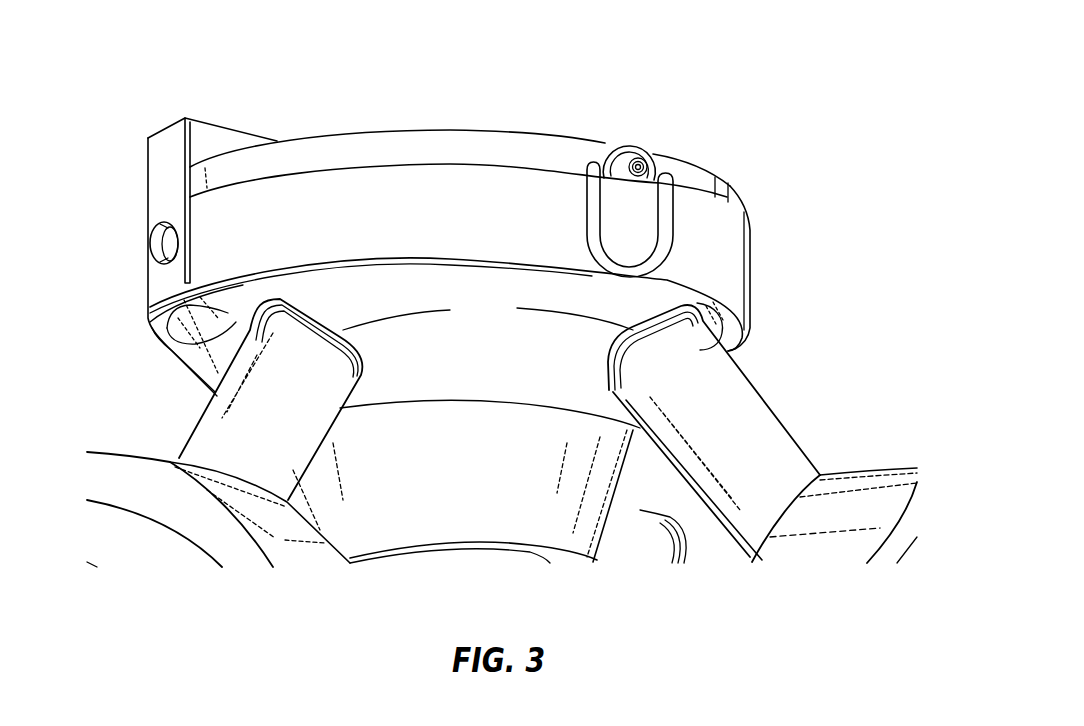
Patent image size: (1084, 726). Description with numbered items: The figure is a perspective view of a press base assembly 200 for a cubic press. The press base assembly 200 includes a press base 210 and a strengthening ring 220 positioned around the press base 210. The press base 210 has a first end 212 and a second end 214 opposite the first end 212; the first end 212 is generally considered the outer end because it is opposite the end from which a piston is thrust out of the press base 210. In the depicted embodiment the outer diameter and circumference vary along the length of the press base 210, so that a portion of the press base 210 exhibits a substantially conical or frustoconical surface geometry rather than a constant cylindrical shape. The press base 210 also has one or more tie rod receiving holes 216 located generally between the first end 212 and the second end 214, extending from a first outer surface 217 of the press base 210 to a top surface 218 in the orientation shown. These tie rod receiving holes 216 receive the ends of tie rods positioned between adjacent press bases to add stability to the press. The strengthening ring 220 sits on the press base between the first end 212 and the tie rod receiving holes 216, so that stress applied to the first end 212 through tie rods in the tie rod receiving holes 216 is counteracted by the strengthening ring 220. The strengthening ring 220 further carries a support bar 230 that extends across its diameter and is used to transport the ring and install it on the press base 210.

The press base assembly 200 is at (828, 143).
The press base 210 is at (165, 350).
The first end 212 is at (518, 158).
The second end 214 is at (507, 502).
The tie rod receiving holes 216 is at (450, 310).
The first outer surface 217 is at (457, 342).
The top surface 218 is at (378, 130).
The strengthening ring 220 is at (215, 232).
The support bar 230 is at (206, 137).